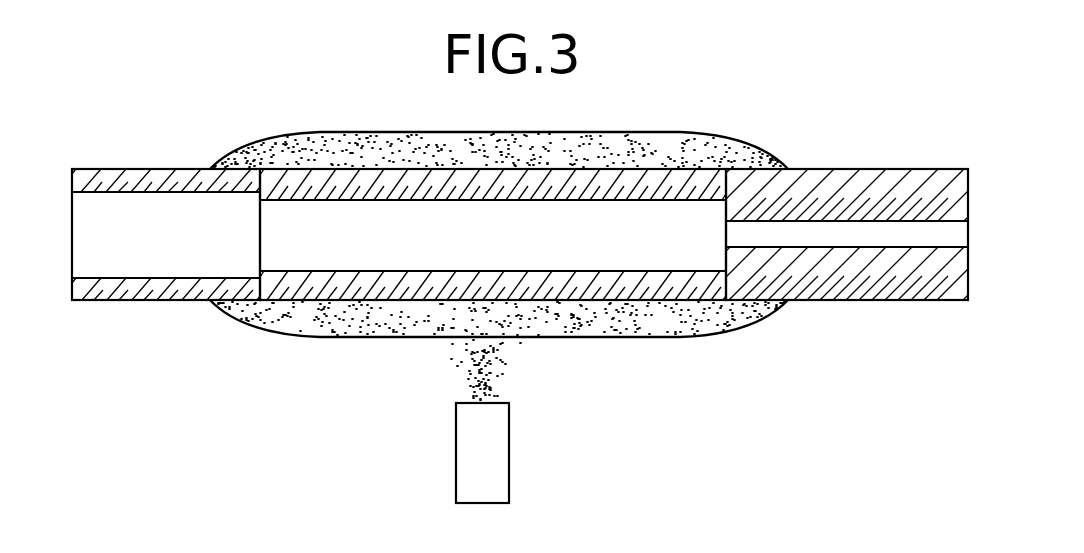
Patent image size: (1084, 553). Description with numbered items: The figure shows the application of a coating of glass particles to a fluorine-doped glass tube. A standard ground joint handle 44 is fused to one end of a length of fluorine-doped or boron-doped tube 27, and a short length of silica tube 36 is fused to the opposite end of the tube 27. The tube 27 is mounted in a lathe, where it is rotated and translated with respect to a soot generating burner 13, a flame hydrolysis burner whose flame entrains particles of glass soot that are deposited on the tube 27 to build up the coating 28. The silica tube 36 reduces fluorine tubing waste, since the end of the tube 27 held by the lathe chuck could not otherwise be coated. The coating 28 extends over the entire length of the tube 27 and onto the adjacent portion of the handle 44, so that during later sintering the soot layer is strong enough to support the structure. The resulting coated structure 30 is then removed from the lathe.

The ground joint handle 44 is at (117, 302).
The fluorine-doped tube 27 is at (696, 290).
The silica tube 36 is at (815, 300).
The coated structure 30 is at (489, 128).
The coating 28 is at (318, 318).
The soot generating burner 13 is at (509, 455).